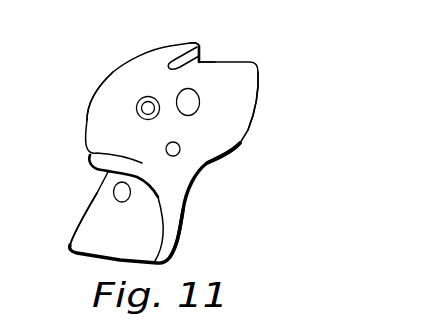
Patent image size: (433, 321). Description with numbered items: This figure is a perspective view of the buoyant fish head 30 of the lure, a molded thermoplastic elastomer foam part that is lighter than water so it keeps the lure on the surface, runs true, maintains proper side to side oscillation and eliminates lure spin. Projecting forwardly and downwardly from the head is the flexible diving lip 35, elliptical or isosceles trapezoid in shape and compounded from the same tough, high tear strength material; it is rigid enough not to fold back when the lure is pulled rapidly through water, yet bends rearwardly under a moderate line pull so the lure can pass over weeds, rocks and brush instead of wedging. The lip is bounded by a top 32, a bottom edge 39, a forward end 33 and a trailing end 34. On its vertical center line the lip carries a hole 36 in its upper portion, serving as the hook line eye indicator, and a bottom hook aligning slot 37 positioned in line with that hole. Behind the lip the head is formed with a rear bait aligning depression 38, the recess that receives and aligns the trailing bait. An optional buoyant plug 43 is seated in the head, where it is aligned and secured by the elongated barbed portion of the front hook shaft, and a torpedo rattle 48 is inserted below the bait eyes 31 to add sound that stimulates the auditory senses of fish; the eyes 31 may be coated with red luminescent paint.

The fish head 30 is at (280, 77).
The eyes 31 is at (136, 104).
The top 32 is at (177, 43).
The forward end 33 is at (89, 120).
The trailing end 34 is at (259, 100).
The flexible diving lip 35 is at (88, 225).
The hole 36 is at (116, 191).
The bottom hook aligning slot 37 is at (230, 152).
The rear bait aligning depression 38 is at (202, 57).
The bottom edge 39 is at (178, 240).
The buoyant plug 43 is at (177, 93).
The torpedo rattle 48 is at (178, 154).